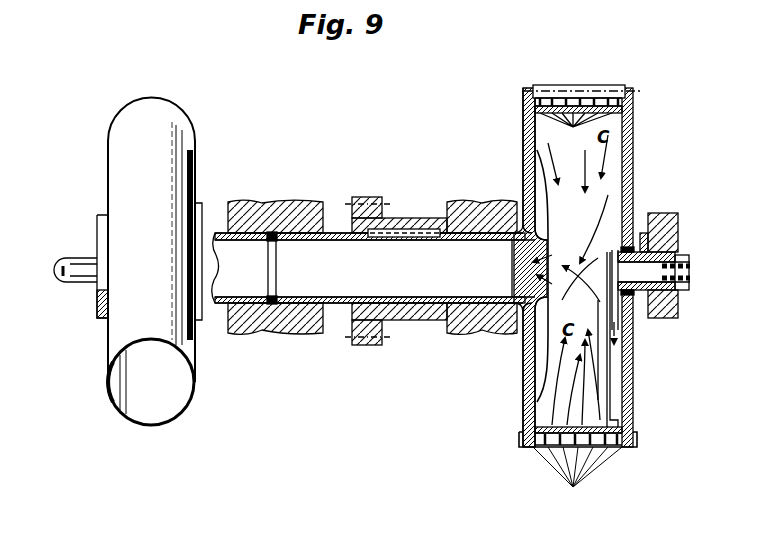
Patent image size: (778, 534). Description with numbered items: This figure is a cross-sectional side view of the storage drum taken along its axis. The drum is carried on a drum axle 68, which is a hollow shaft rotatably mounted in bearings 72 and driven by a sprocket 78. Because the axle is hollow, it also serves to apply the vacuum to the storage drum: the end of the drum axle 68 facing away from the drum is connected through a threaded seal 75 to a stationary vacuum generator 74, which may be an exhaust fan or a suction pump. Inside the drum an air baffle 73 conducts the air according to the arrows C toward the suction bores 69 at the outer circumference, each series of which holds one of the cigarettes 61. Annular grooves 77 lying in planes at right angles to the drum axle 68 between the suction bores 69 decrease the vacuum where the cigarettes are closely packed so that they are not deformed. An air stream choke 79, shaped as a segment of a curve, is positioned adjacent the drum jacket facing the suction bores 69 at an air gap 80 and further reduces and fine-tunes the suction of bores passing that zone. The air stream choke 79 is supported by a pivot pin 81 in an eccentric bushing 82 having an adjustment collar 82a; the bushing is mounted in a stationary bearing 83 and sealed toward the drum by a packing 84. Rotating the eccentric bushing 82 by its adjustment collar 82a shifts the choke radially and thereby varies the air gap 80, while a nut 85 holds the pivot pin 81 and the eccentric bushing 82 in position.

The vacuum generator 74 is at (150, 108).
The bearings 72 is at (242, 200).
The threaded seal 75 is at (273, 236).
The drum axle 68 is at (334, 233).
The sprocket 78 is at (372, 197).
The cigarettes 61 is at (600, 85).
The suction bores 69 is at (570, 278).
The air baffle 73 is at (550, 211).
The eccentric bushing 82 is at (630, 248).
The stationary bearing 83 is at (662, 216).
The adjustment collar 82a is at (645, 247).
The nut 85 is at (684, 259).
The pivot pin 81 is at (675, 295).
The packing 84 is at (620, 300).
The air stream choke 79 is at (608, 394).
The air gap 80 is at (620, 428).
The annular grooves 77 is at (577, 480).